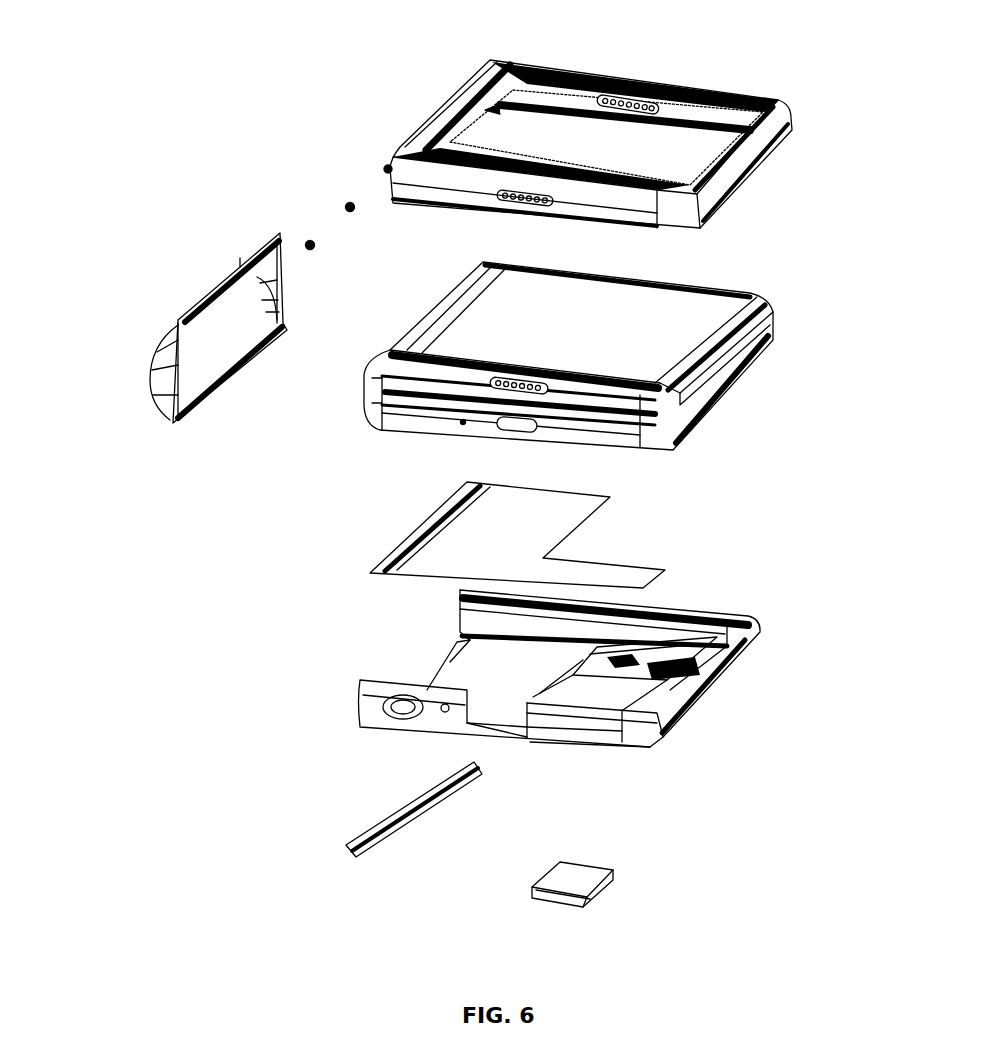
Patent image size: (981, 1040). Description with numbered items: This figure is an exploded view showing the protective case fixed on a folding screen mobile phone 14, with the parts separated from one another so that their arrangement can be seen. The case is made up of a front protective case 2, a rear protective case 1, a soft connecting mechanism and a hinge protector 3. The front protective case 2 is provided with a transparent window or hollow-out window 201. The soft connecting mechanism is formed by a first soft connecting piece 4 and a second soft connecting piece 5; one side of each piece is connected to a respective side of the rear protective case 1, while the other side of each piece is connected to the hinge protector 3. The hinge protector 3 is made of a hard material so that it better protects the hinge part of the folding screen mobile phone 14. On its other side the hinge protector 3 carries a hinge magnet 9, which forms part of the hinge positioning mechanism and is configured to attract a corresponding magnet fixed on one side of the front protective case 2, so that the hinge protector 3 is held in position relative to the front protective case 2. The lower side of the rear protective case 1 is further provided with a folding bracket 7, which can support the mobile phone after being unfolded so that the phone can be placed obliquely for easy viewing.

The rear protective case 1 is at (710, 693).
The front protective case 2 is at (760, 143).
The transparent window or hollow-out window 201 is at (672, 142).
The hinge protector 3 is at (197, 367).
The first soft connecting piece 4 is at (517, 528).
The second soft connecting piece 5 is at (455, 798).
The folding bracket 7 is at (567, 876).
The hinge magnet 9 is at (303, 237).
The folding screen mobile phone 14 is at (673, 343).